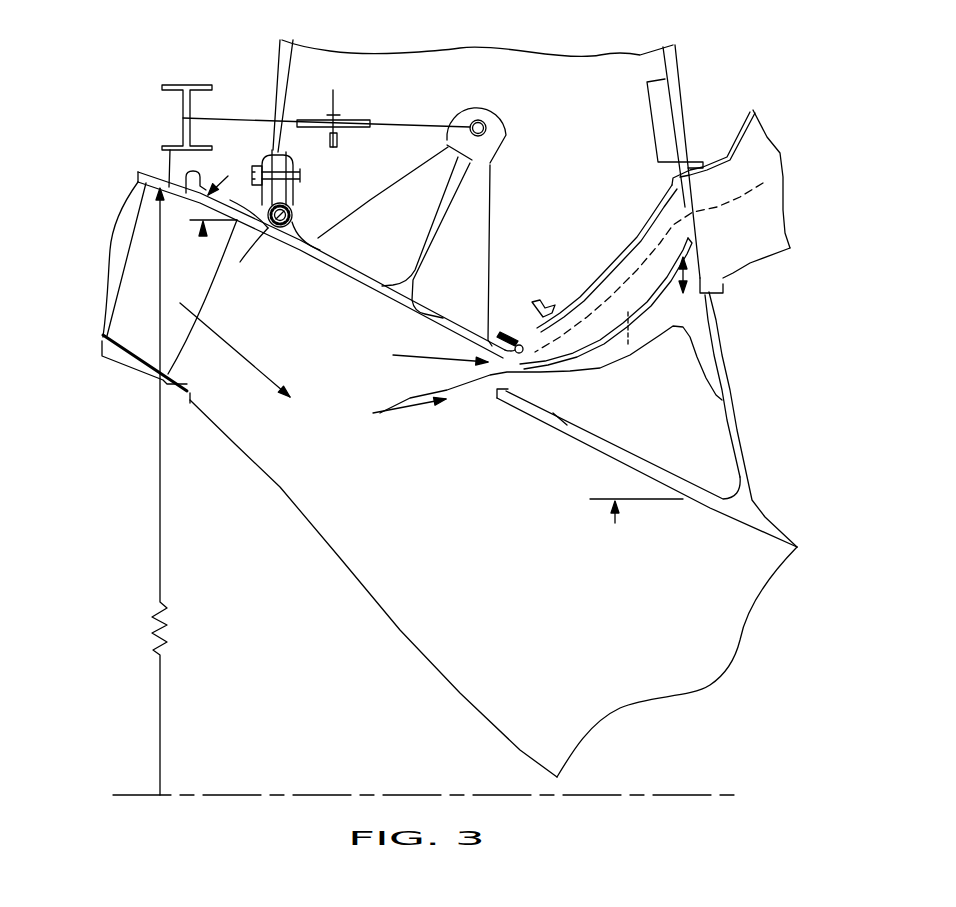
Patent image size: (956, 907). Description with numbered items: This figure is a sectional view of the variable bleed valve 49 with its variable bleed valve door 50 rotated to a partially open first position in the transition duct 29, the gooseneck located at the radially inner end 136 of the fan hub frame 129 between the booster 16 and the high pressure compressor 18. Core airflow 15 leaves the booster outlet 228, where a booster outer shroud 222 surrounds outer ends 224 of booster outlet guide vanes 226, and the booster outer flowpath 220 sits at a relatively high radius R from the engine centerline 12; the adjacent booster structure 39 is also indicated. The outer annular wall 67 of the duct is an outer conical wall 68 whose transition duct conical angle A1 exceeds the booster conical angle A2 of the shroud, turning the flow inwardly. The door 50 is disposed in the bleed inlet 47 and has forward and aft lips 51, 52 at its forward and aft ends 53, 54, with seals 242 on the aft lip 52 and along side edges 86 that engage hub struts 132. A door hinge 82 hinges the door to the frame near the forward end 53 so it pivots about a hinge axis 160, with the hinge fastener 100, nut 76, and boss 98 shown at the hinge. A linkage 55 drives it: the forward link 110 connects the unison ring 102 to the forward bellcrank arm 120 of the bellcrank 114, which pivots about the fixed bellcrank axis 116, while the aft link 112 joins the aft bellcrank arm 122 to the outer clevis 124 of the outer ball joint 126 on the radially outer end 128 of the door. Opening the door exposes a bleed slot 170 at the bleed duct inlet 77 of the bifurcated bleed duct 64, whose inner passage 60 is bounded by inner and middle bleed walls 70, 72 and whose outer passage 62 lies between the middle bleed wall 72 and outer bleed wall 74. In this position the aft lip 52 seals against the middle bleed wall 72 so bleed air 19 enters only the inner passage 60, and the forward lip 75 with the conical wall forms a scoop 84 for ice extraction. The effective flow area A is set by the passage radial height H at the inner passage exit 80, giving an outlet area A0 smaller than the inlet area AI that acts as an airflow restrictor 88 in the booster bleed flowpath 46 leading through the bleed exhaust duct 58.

The engine centerline 12 is at (228, 796).
The radius R is at (161, 680).
The core airflow 15 is at (233, 343).
The booster 16 is at (93, 273).
The high pressure compressor 18 is at (686, 731).
The bleed air 19 is at (430, 365).
The transition duct 29 is at (565, 591).
The forward casing wall 39 is at (137, 263).
The booster bleed flowpath 46 is at (740, 203).
The bleed inlet 47 is at (395, 412).
The variable bleed valve 49 is at (353, 197).
The variable bleed valve door 50 is at (343, 260).
The forward lip 51 is at (220, 257).
The aft lip 52 is at (513, 350).
The forward end 53 is at (265, 166).
The aft end 54 is at (489, 320).
The linkage 55 is at (404, 83).
The bleed exhaust duct 58 is at (757, 277).
The inner passage 60 is at (620, 353).
The outer passage 62 is at (657, 269).
The bifurcated bleed duct 64 is at (607, 262).
The outer annular wall 67 is at (613, 460).
The outer conical wall 68 is at (598, 455).
The inner bleed wall 70 is at (558, 372).
The middle bleed wall 72 is at (540, 337).
The outer bleed wall 74 is at (553, 300).
The forward lip 75 is at (497, 392).
The nut 76 is at (292, 214).
The bleed duct inlet 77 is at (500, 392).
The inner passage exit 80 is at (675, 121).
The door hinge 82 is at (288, 151).
The scoop 84 is at (493, 388).
The side edges 86 is at (433, 317).
The airflow restrictor 88 is at (706, 237).
The boss 98 is at (300, 237).
The bolt 100 is at (300, 173).
The unison ring 102 is at (185, 105).
The forward link 110 is at (265, 113).
The aft link 112 is at (440, 118).
The bellcrank 114 is at (338, 138).
The bellcrank axis 116 is at (334, 92).
The forward bellcrank arm 120 is at (278, 142).
The aft bellcrank arm 122 is at (353, 110).
The outer clevis 124 is at (493, 110).
The outer ball joint 126 is at (483, 120).
The radially outer end 128 is at (513, 142).
The fan hub frame 129 is at (738, 413).
The hub struts 132 is at (676, 48).
The radially inner end 136 is at (657, 433).
The hinge axis 160 is at (262, 230).
The bleed slot 170 is at (470, 381).
The booster outer flowpath 220 is at (140, 183).
The booster outer shroud 222 is at (232, 240).
The outer ends 224 is at (170, 148).
The booster outlet guide vanes 226 is at (193, 281).
The booster outlet 228 is at (194, 374).
The seals 242 is at (542, 334).
The effective flow area A is at (643, 331).
The outlet area A0 is at (698, 258).
The transition duct conical angle A1 is at (616, 522).
The booster conical angle A2 is at (208, 240).
The inlet area AI is at (578, 370).
The passage radial height H is at (705, 300).